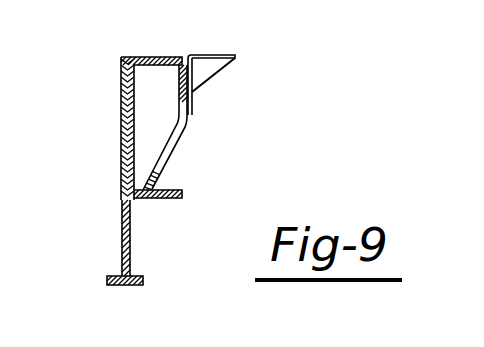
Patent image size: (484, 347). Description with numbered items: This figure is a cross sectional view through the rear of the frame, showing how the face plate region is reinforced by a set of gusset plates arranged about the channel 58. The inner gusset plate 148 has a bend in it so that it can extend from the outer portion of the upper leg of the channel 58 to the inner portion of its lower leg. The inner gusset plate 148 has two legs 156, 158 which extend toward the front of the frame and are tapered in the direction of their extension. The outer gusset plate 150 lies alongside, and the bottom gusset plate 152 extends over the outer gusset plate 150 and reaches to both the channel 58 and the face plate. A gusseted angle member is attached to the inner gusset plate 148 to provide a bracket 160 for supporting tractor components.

The channel 58 is at (150, 57).
The inner gusset plate 148 is at (192, 122).
The outer gusset plate 150 is at (122, 230).
The bottom gusset plate 152 is at (112, 285).
The leg 156 is at (190, 112).
The leg 158 is at (153, 178).
The bracket 160 is at (226, 77).